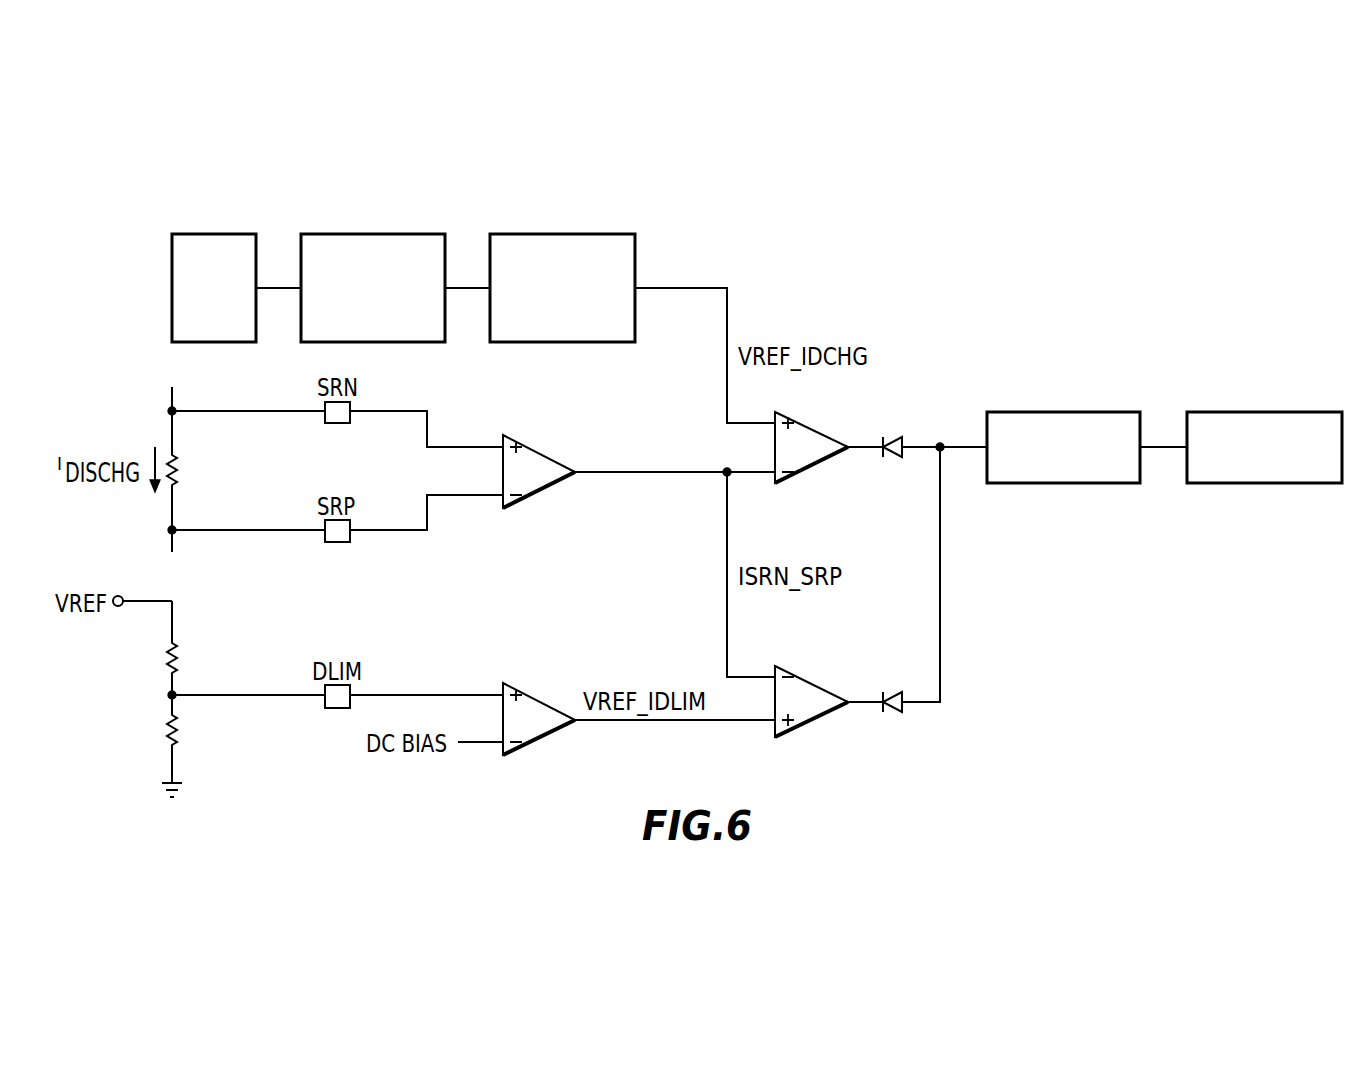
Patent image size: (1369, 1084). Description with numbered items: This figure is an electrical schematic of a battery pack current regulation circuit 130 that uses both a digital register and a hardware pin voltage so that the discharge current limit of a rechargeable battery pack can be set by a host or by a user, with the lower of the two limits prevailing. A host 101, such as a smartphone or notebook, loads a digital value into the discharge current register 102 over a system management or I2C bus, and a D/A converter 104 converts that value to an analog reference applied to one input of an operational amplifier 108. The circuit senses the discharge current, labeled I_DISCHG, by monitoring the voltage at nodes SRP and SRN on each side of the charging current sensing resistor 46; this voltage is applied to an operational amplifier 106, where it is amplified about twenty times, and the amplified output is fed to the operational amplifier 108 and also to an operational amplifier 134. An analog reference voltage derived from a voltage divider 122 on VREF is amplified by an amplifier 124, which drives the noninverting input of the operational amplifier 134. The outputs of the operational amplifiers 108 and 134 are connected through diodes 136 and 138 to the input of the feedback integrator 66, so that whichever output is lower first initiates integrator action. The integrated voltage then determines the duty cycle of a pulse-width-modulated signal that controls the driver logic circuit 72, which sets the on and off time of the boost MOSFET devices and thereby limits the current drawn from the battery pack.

The host 101 is at (213, 233).
The discharge current register 102 is at (373, 233).
The D/A converter 104 is at (562, 233).
The battery pack current regulation circuit 130 is at (1018, 236).
The charging current sensing resistor 46 is at (242, 470).
The operational amplifier 106 is at (538, 450).
The operational amplifier 108 is at (812, 428).
The diode 136 is at (893, 437).
The feedback integrator 66 is at (1065, 412).
The driver logic circuit 72 is at (1265, 412).
The voltage divider 122 is at (148, 672).
The amplifier 124 is at (542, 740).
The operational amplifier 134 is at (812, 722).
The diode 138 is at (893, 712).